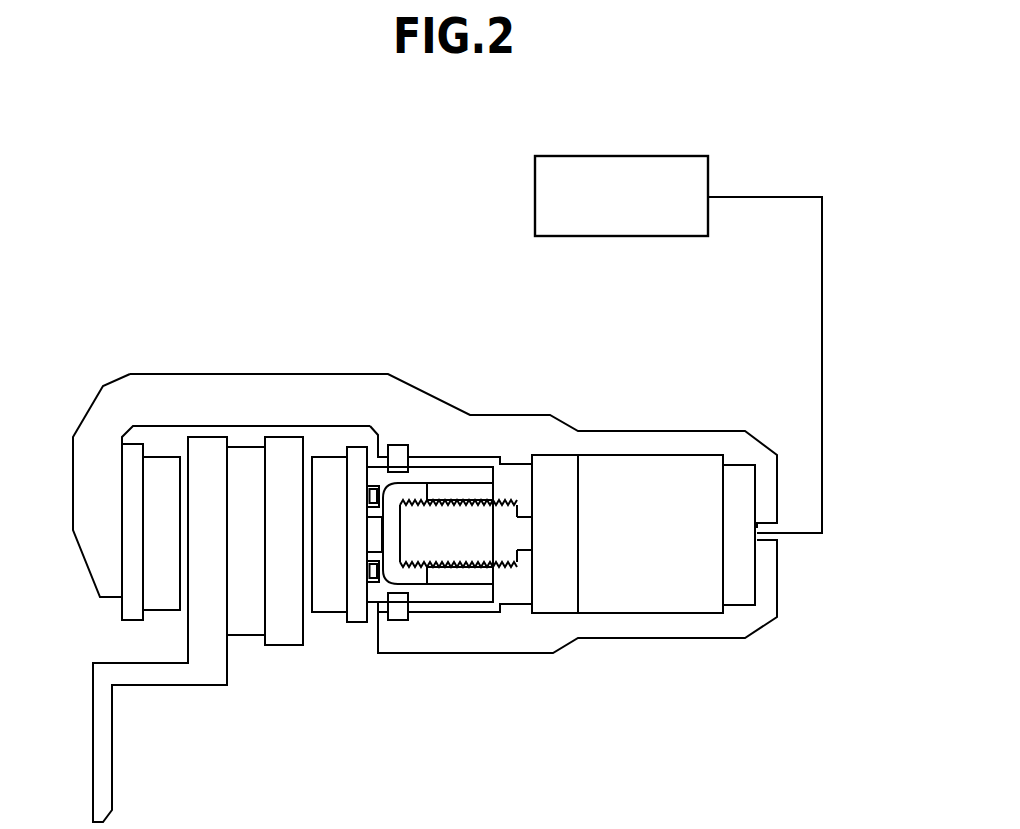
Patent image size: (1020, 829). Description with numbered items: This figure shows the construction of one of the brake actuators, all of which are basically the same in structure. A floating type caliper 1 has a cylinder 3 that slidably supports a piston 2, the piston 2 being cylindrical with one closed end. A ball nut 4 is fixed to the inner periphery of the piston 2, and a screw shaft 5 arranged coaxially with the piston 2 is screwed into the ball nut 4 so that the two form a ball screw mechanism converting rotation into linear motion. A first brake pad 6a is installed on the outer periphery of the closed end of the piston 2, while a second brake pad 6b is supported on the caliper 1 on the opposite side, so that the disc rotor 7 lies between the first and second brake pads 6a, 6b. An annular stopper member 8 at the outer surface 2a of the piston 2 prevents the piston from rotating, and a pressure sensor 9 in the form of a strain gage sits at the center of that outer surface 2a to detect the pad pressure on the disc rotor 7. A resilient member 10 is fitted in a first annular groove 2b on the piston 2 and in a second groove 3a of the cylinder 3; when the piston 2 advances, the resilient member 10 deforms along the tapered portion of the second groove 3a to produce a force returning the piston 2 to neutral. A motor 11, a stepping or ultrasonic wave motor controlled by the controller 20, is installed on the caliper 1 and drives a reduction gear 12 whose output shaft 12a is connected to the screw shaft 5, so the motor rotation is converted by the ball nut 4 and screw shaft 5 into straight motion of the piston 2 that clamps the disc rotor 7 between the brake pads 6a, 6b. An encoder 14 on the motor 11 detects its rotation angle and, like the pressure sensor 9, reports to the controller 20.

The floating type caliper 1 is at (528, 428).
The piston 2 is at (443, 472).
The outer surface of piston 2a is at (373, 606).
The first annular groove 2b is at (398, 621).
The cylinder 3 is at (447, 608).
The second groove 3a is at (404, 621).
The ball nut 4 is at (481, 576).
The screw shaft 5 is at (479, 527).
The first brake pad 6a is at (332, 470).
The second brake pad 6b is at (162, 480).
The disc rotor 7 is at (213, 670).
The annular stopper member 8 is at (365, 572).
The pressure sensor 9 is at (383, 523).
The resilient member 10 is at (399, 446).
The motor 11 is at (677, 482).
The reduction gear 12 is at (557, 593).
The output shaft 12a is at (525, 533).
The encoder 14 is at (737, 593).
The controller 20 is at (680, 156).